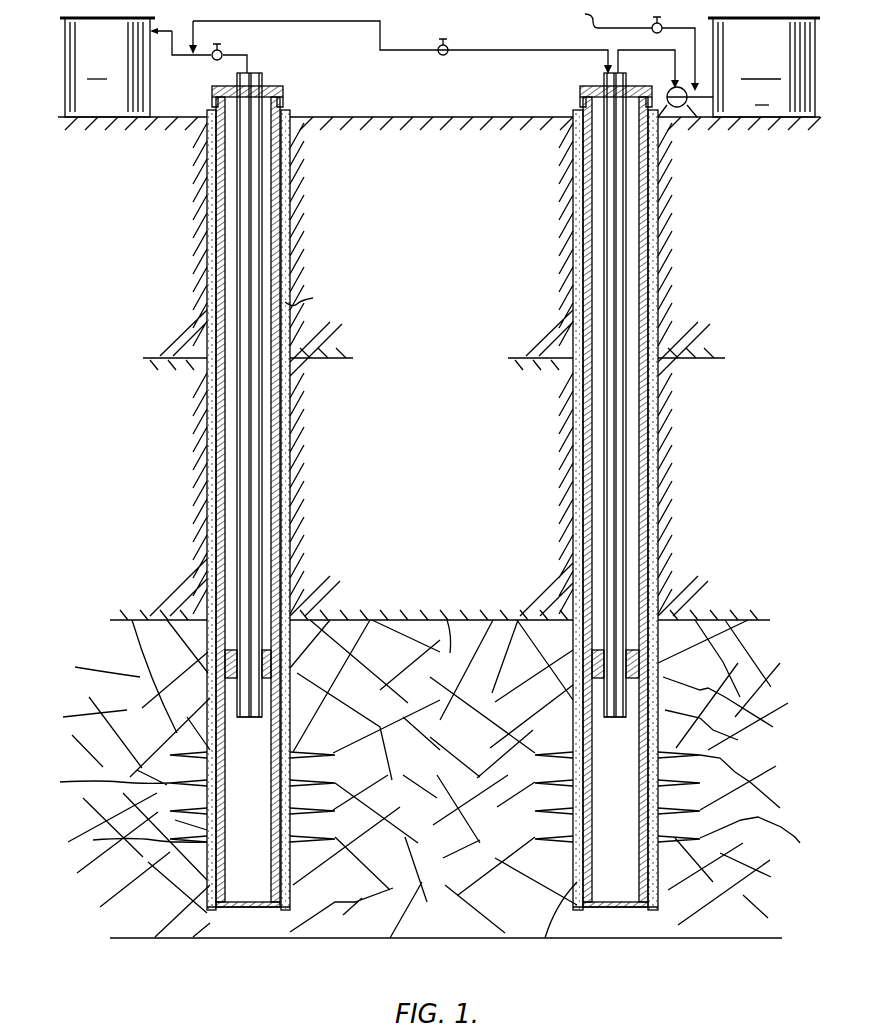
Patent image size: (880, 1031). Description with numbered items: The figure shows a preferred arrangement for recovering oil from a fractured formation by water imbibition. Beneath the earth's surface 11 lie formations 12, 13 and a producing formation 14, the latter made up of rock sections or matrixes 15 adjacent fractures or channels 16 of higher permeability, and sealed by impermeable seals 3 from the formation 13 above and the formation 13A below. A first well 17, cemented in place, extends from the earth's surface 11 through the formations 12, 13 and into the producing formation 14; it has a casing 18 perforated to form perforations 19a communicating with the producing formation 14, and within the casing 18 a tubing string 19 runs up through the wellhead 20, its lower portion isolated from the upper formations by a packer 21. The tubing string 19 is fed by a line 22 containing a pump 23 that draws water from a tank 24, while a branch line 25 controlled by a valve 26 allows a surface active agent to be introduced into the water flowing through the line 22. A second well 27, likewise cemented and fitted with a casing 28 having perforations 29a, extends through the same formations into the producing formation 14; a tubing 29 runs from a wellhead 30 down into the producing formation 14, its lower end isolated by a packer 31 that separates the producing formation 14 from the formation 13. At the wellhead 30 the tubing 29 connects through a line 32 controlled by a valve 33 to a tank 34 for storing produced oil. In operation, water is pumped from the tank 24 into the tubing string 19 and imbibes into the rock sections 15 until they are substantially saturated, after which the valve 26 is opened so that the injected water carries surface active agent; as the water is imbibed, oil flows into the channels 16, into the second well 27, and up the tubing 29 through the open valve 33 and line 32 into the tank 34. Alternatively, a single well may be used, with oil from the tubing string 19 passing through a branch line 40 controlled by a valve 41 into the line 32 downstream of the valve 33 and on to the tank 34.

The impermeable seals 3 is at (118, 624).
The earth's surface 11 is at (482, 117).
The formation 12 is at (426, 254).
The formation 13 is at (431, 480).
The formation 13A is at (441, 977).
The producing formation 14 is at (449, 620).
The rock sections or matrixes 15 is at (161, 644).
The fractures or channels 16 is at (137, 652).
The first well 17 is at (655, 206).
The casing 18 is at (643, 250).
The tubing string 19 is at (613, 297).
The perforations 19a is at (616, 762).
The wellhead 20 is at (579, 90).
The packer 21 is at (639, 650).
The line 22 is at (664, 65).
The pump 23 is at (681, 106).
The tank 24 is at (773, 50).
The branch line 25 is at (610, 28).
The valve 26 is at (660, 23).
The second well 27 is at (211, 207).
The casing 28 is at (223, 258).
The tubing 29 is at (250, 302).
The perforations 29a is at (252, 762).
The wellhead 30 is at (276, 86).
The packer 31 is at (273, 643).
The line 32 is at (245, 60).
The valve 33 is at (215, 62).
The tank 34 is at (111, 50).
The branch line 40 is at (382, 50).
The valve 41 is at (441, 55).